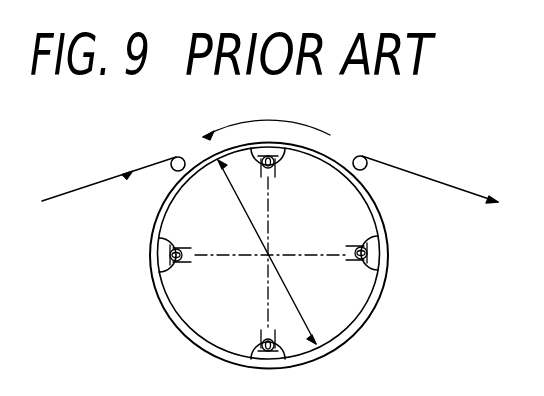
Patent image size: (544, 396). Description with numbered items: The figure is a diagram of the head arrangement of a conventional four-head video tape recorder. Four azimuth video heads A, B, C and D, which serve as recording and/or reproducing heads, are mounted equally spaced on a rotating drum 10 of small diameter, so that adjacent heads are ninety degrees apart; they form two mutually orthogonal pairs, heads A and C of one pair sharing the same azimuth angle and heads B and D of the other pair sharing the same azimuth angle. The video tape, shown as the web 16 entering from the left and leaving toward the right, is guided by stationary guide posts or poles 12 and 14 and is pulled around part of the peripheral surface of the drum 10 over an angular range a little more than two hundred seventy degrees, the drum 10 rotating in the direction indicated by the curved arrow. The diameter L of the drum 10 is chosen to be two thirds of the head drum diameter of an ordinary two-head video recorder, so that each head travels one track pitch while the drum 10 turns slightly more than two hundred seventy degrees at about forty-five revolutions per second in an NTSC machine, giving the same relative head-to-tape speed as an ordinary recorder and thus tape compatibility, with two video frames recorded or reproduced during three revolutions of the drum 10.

The drum 10 is at (328, 172).
The stationary guide post 12 is at (168, 172).
The stationary guide post 14 is at (366, 171).
The web 16 is at (65, 190).
The azimuth video head A is at (280, 162).
The azimuth video head B is at (360, 246).
The azimuth video head C is at (257, 342).
The azimuth video head D is at (172, 246).
The diameter of the drum L is at (267, 252).